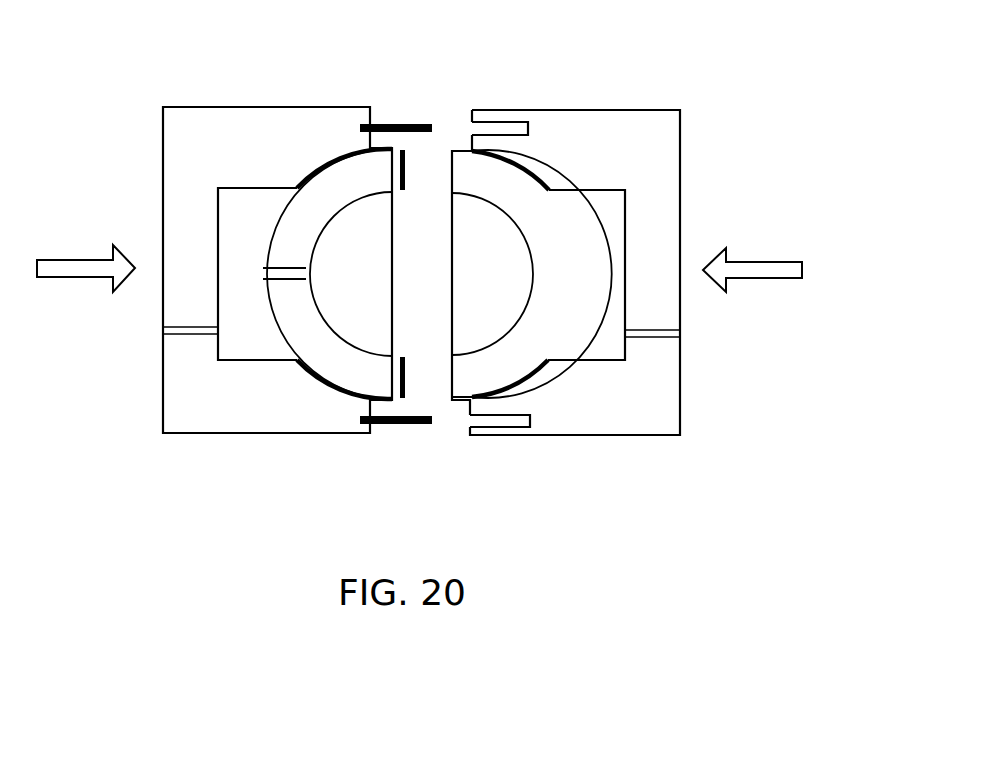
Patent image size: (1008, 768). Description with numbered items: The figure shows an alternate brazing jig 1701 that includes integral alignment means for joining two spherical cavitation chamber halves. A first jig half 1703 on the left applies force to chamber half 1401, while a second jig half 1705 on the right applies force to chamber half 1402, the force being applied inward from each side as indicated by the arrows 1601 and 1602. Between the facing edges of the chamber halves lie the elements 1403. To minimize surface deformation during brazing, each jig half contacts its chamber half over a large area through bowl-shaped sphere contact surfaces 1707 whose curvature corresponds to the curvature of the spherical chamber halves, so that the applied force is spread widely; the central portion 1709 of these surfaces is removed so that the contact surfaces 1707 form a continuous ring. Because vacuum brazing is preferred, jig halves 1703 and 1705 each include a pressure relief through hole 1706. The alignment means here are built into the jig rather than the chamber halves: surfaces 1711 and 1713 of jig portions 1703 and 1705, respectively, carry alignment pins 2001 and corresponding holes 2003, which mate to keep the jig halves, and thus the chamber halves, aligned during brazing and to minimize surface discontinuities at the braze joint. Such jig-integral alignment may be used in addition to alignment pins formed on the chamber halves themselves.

The chamber half 1401 is at (323, 202).
The chamber half 1402 is at (510, 190).
The electrode 1403 is at (398, 188).
The applied force (left side) 1601 is at (86, 281).
The applied force (right side) 1602 is at (752, 280).
The brazing jig 1701 is at (710, 110).
The first jig half 1703 is at (190, 420).
The second jig half 1705 is at (662, 398).
The pressure relief through hole 1706 is at (163, 329).
The sphere contact surfaces 1707 is at (335, 147).
The central portion 1709 is at (237, 348).
The surface 1711 is at (386, 438).
The surface 1713 is at (460, 438).
The alignment pins 2001 is at (392, 124).
The holes 2003 is at (530, 128).